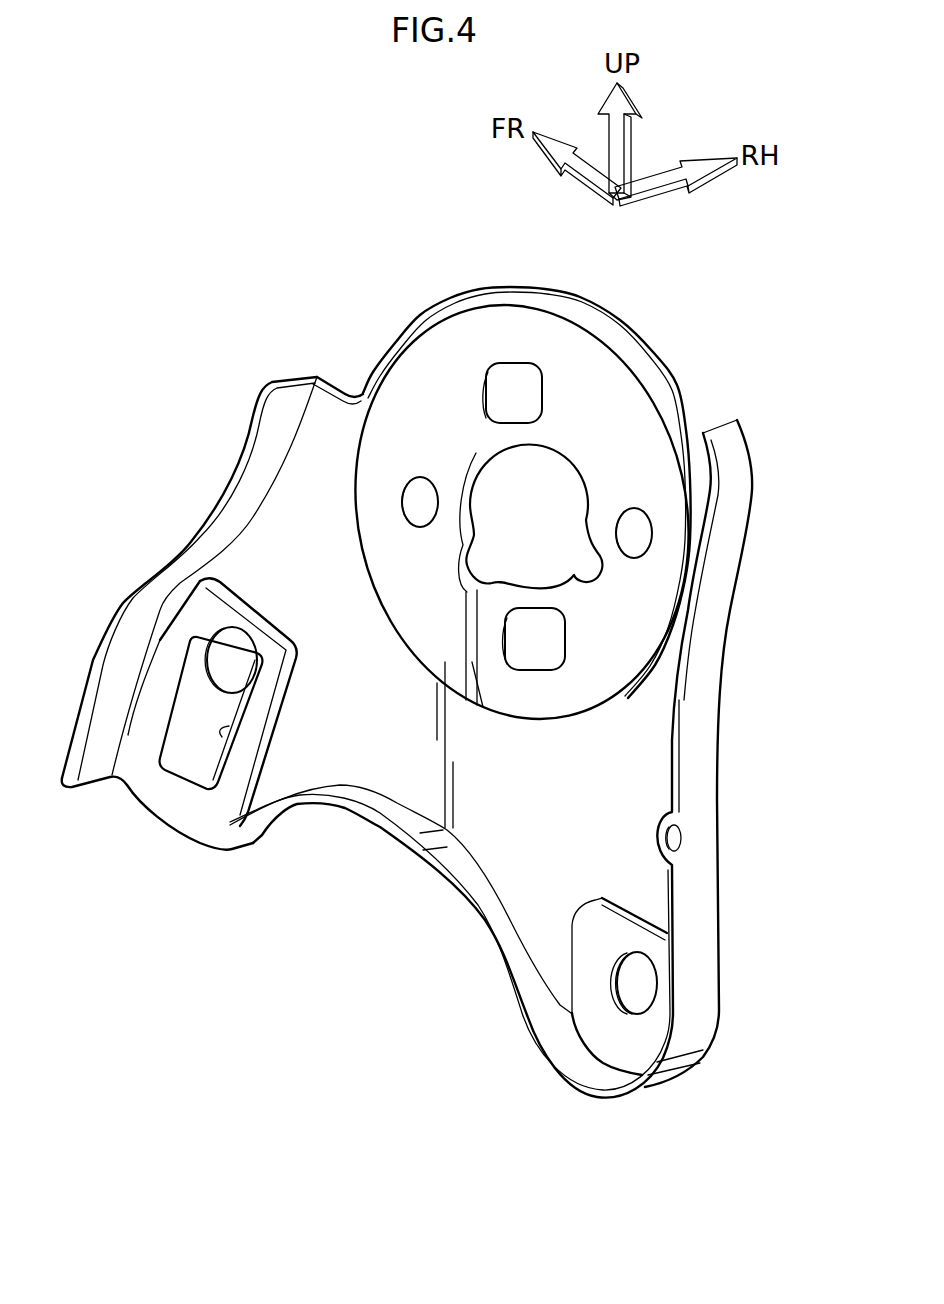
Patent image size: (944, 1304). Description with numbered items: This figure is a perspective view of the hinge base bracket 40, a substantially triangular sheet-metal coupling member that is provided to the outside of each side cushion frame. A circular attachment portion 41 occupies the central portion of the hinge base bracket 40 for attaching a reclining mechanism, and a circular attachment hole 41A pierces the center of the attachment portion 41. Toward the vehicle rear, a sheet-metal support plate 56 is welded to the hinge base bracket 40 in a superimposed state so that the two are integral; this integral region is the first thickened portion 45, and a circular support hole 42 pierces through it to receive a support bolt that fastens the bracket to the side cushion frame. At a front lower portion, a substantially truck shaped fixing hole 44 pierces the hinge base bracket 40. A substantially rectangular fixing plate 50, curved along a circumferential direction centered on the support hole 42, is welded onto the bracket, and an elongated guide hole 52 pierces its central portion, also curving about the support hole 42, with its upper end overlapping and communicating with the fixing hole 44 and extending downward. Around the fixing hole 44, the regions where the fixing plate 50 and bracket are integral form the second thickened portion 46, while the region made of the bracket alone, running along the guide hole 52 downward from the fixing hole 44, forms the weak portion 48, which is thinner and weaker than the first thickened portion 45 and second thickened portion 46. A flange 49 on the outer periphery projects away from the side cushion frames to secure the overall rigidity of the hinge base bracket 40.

The hinge base bracket 40 is at (617, 327).
The attachment portion 41 is at (557, 322).
The attachment hole 41A is at (543, 450).
The support hole 42 is at (641, 970).
The fixing hole 44 is at (212, 660).
The first thickened portion 45 is at (613, 1033).
The second thickened portion 46 is at (273, 655).
The weak portion 48 is at (190, 757).
The flange 49 is at (250, 430).
The fixing plate 50 is at (153, 660).
The guide hole 52 is at (217, 730).
The support plate 56 is at (580, 903).